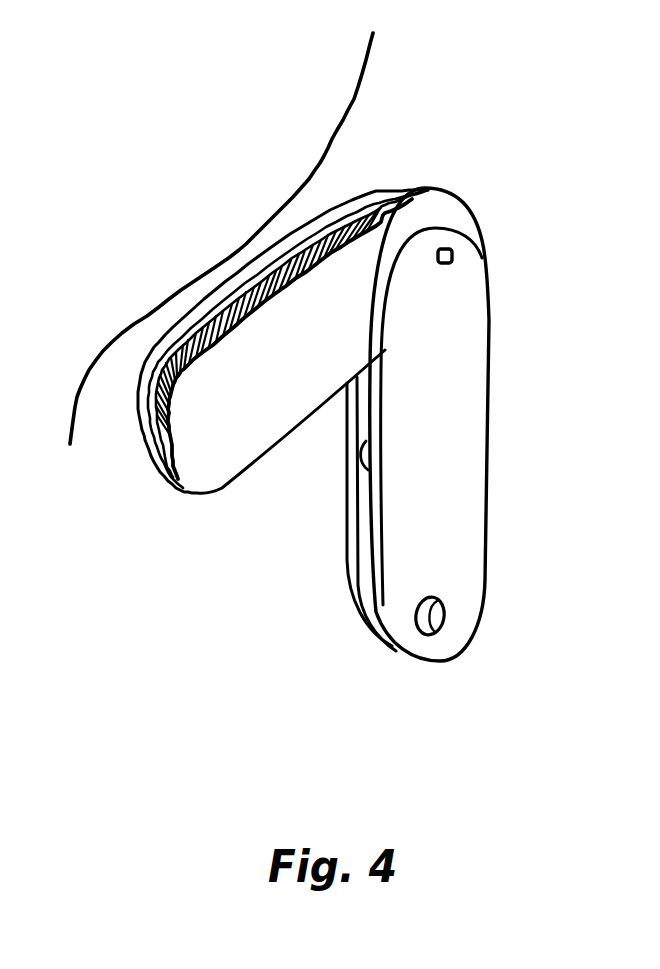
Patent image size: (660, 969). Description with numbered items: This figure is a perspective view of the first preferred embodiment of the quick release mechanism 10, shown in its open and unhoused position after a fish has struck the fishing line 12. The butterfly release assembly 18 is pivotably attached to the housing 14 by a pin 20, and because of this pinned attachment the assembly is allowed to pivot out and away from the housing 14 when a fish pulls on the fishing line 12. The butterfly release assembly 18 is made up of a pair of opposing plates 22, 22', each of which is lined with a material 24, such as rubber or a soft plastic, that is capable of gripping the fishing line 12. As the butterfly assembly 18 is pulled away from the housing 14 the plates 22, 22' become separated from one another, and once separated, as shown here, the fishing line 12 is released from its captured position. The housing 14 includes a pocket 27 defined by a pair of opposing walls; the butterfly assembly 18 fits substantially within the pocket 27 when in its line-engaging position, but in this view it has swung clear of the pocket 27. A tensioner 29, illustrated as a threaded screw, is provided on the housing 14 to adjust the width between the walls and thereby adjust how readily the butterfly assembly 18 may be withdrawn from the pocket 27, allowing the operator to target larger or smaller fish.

The quick release mechanism 10 is at (545, 411).
The fishing line 12 is at (346, 117).
The housing 14 is at (462, 552).
The butterfly release assembly 18 is at (257, 430).
The pin 20 is at (453, 257).
The plate 22 is at (259, 339).
The plate 22' is at (273, 514).
The material 24 is at (274, 268).
The pocket 27 is at (368, 470).
The tensioner 29 is at (415, 634).